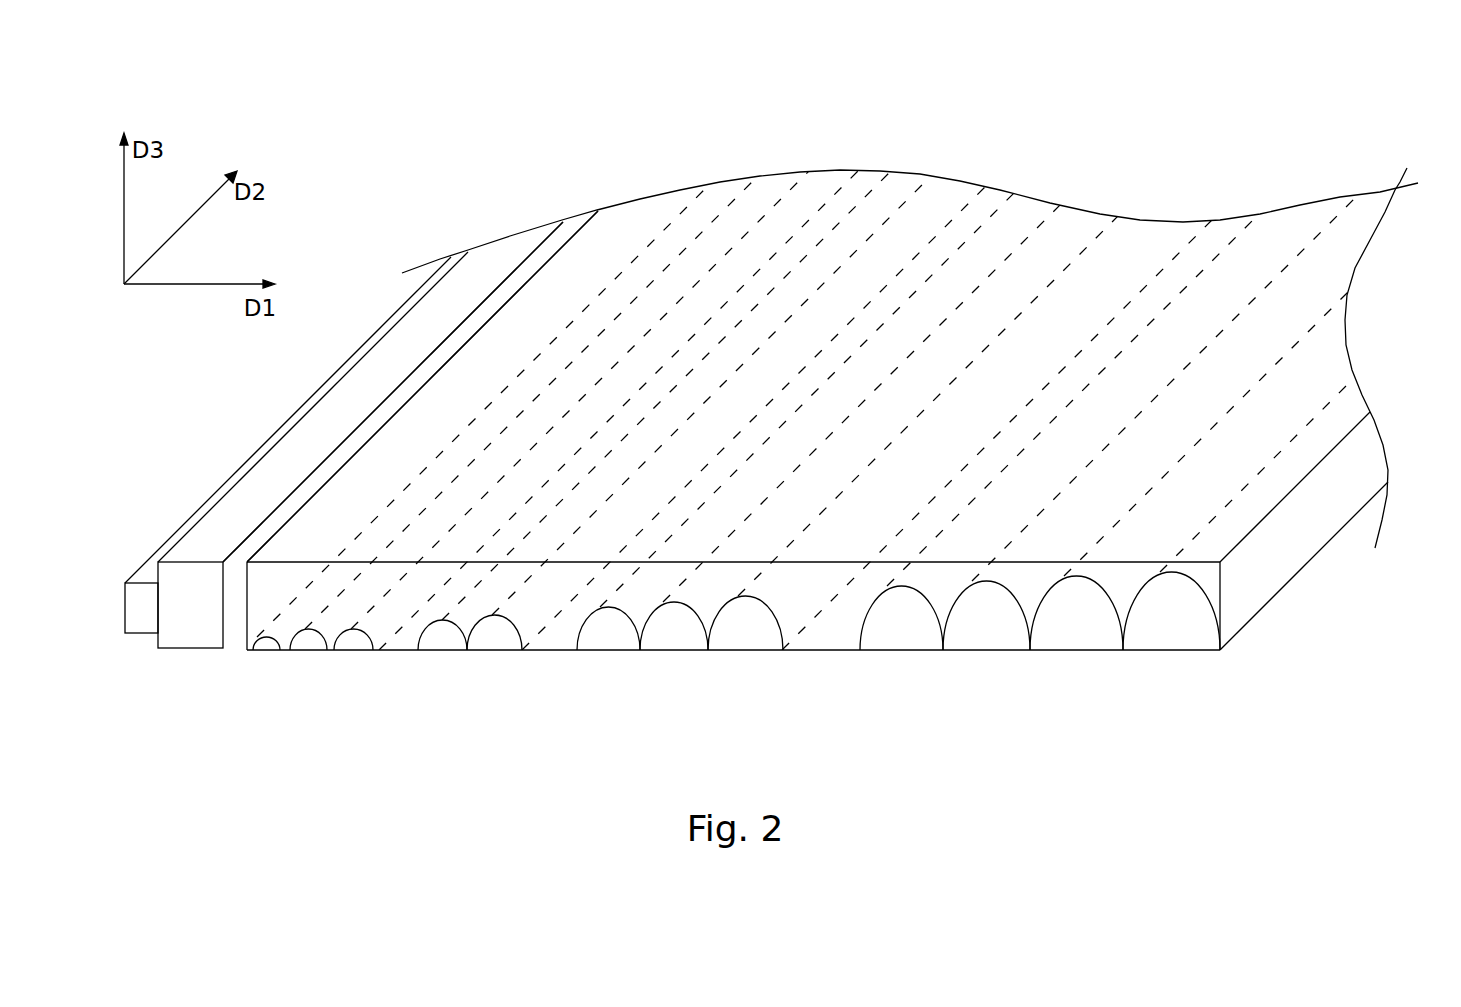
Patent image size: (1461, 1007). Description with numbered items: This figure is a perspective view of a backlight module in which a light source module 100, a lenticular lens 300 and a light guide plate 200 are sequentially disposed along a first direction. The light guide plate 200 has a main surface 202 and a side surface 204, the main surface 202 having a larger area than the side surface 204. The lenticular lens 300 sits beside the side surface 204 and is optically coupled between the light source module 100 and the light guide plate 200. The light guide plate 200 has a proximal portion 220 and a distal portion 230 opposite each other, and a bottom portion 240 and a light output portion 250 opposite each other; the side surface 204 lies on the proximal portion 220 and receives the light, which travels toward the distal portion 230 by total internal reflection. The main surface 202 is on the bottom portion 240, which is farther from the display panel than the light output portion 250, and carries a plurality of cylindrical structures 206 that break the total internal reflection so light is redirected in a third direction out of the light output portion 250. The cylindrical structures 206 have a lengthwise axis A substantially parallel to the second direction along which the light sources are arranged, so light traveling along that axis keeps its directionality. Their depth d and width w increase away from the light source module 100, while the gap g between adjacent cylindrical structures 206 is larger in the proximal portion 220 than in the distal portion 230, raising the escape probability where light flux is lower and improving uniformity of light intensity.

The light source module 100 is at (140, 612).
The lenticular lens 300 is at (193, 613).
The light guide plate 200 is at (843, 431).
The main surface 202 is at (542, 652).
The side surface 204 is at (347, 458).
The cylindrical structures 206 is at (440, 637).
The proximal portion 220 is at (272, 582).
The distal portion 230 is at (1207, 575).
The bottom portion 240 is at (677, 652).
The light output portion 250 is at (1230, 530).
The lengthwise axis A is at (778, 200).
The gap g is at (335, 650).
The width w is at (860, 650).
The depth d is at (987, 582).